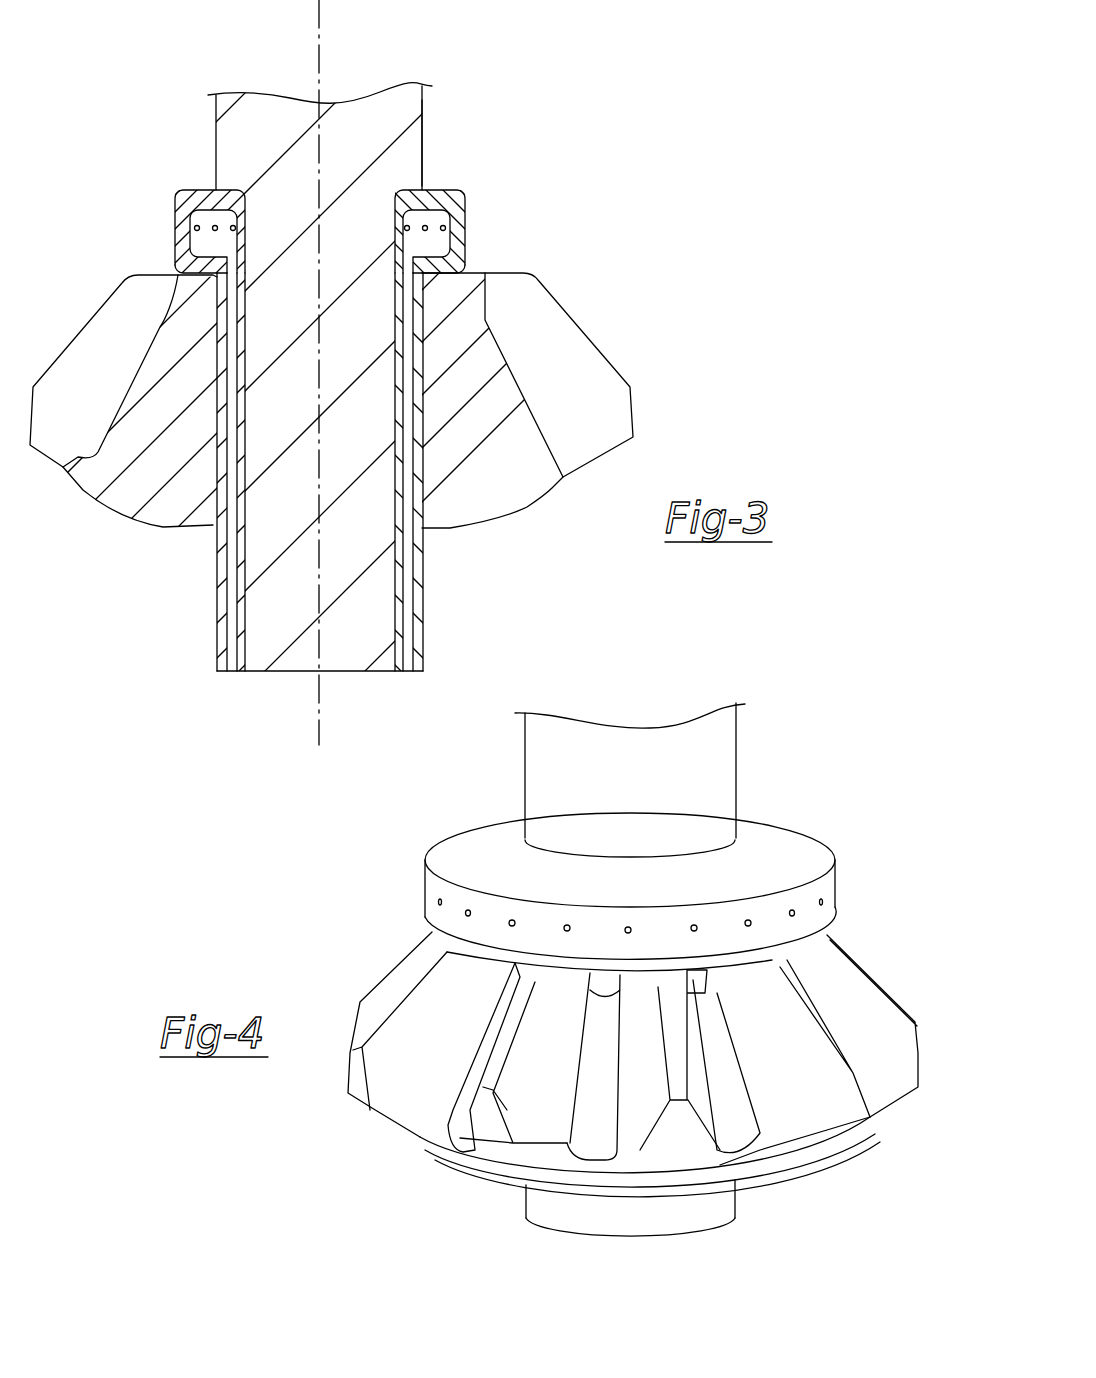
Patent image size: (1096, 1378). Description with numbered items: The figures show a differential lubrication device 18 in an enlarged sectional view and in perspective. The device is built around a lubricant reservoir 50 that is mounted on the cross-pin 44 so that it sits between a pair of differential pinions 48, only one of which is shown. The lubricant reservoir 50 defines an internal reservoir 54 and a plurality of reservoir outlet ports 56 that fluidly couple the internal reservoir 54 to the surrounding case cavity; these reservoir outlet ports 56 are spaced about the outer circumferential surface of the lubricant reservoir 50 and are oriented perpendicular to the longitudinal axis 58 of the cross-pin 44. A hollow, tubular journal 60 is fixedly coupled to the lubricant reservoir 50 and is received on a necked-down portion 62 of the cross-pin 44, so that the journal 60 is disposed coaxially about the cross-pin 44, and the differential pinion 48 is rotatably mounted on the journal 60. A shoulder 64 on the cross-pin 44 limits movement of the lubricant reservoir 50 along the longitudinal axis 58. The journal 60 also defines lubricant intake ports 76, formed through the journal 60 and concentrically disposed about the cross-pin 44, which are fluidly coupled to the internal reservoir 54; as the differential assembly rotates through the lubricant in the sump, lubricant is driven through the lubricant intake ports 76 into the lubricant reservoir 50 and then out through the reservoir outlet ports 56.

In FIG. 3, the differential lubrication device 18 is at (485, 350).
In FIG. 4, the differential lubrication device 18 is at (597, 858).
In FIG. 3, the cross-pin 44 is at (382, 117).
In FIG. 4, the cross-pin 44 is at (713, 748).
In FIG. 3, the differential pinion 48 is at (178, 495).
In FIG. 4, the differential pinion 48 is at (840, 975).
In FIG. 3, the lubricant reservoir 50 is at (176, 212).
In FIG. 4, the lubricant reservoir 50 is at (808, 853).
In FIG. 3, the internal reservoir 54 is at (430, 248).
In FIG. 3, the reservoir outlet ports 56 is at (213, 230).
In FIG. 4, the reservoir outlet ports 56 is at (466, 913).
In FIG. 3, the longitudinal axis 58 is at (319, 43).
In FIG. 3, the journal 60 is at (425, 625).
In FIG. 4, the journal 60 is at (548, 1213).
In FIG. 3, the necked-down portion 62 is at (246, 607).
In FIG. 3, the shoulder 64 is at (414, 156).
In FIG. 3, the lubricant intake ports 76 is at (232, 658).